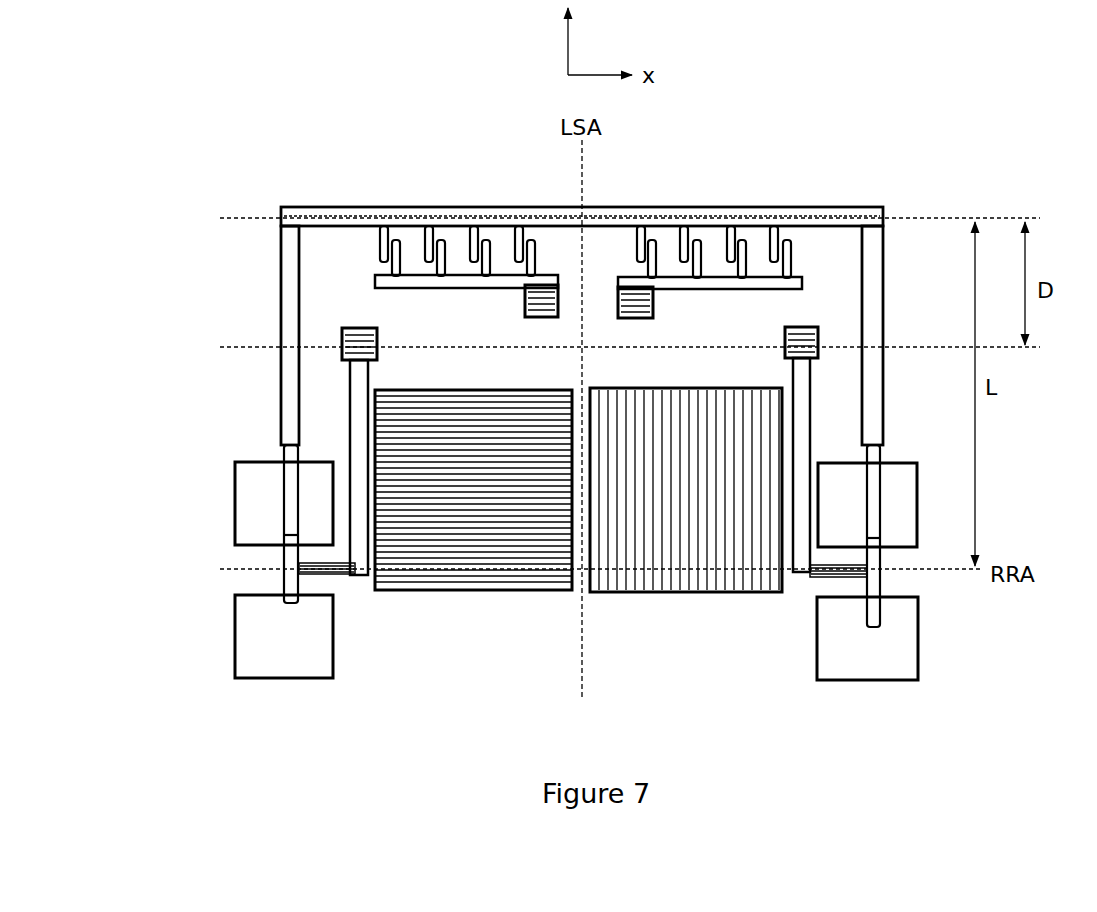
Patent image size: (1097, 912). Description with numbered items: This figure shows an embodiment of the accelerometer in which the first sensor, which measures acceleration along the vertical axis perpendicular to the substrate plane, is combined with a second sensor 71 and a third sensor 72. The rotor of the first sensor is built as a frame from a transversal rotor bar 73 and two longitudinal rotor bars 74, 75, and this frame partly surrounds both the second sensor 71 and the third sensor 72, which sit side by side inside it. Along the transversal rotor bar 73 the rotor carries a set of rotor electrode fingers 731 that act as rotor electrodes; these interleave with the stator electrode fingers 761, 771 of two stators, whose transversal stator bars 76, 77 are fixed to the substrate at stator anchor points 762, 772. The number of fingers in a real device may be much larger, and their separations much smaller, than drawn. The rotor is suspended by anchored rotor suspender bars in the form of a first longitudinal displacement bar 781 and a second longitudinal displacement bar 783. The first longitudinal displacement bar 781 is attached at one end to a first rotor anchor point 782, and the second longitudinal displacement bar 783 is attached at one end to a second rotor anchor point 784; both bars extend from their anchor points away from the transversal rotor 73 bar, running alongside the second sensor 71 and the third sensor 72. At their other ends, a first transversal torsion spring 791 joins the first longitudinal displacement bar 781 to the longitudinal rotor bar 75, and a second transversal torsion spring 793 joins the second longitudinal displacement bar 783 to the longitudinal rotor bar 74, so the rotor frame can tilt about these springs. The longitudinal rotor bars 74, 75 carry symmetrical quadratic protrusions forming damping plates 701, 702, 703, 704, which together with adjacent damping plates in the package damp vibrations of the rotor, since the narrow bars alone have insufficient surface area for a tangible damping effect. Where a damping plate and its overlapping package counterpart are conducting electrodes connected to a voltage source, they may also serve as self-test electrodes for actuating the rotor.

The second sensor 71 is at (702, 517).
The third sensor 72 is at (418, 517).
The transversal rotor bar 73 is at (826, 222).
The longitudinal rotor bar 74 is at (284, 258).
The longitudinal rotor bar 75 is at (872, 296).
The transversal stator bar 76 is at (729, 218).
The transversal stator bar 77 is at (466, 217).
The rotor electrode fingers 731 is at (384, 248).
The stator electrode fingers 761 is at (790, 255).
The stator anchor point 762 is at (635, 306).
The stator electrode fingers 771 is at (531, 262).
The stator anchor point 772 is at (541, 300).
The first longitudinal displacement bar 781 is at (801, 412).
The first rotor anchor point 782 is at (802, 344).
The second longitudinal displacement bar 783 is at (357, 440).
The second rotor anchor point 784 is at (358, 345).
The first transversal torsion spring 791 is at (848, 574).
The second transversal torsion spring 793 is at (322, 573).
The damping plate 701 is at (265, 500).
The damping plate 702 is at (258, 642).
The damping plate 703 is at (874, 512).
The damping plate 704 is at (871, 655).